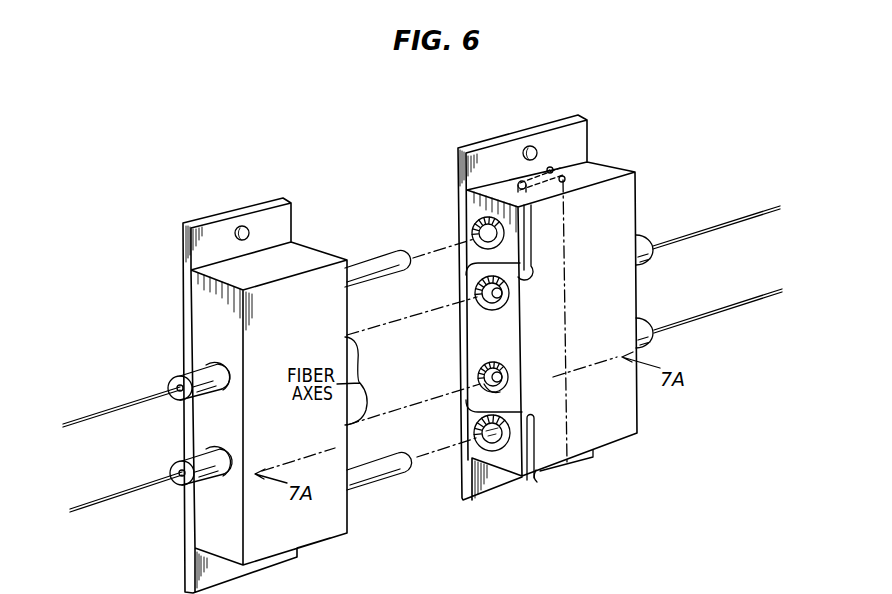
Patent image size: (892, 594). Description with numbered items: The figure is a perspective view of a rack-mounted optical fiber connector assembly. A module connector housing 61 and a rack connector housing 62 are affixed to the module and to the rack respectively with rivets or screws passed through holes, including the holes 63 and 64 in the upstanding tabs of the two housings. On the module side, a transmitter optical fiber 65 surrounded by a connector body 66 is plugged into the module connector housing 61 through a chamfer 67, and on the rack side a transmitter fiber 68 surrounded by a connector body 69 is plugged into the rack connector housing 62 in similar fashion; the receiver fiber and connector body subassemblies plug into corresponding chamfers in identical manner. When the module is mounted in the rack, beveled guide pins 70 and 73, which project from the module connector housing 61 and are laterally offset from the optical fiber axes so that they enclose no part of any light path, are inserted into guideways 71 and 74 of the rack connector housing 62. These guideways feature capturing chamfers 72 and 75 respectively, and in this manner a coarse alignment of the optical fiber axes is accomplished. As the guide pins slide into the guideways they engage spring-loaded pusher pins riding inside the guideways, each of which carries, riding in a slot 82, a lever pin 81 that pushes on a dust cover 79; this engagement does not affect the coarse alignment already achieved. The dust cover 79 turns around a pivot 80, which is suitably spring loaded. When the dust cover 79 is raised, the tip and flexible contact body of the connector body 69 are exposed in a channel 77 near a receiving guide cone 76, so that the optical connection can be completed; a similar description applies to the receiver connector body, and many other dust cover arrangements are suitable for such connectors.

The module connector housing 61 is at (186, 286).
The rack connector housing 62 is at (626, 174).
The hole 63 is at (241, 228).
The hole 64 is at (528, 147).
The transmitter optical fiber 65 is at (90, 505).
The connector body 66 is at (183, 464).
The chamfer 67 is at (212, 486).
The transmitter fiber 68 is at (764, 289).
The connector body 69 is at (644, 320).
The beveled guide pin 70 is at (370, 262).
The guideway 71 is at (483, 222).
The capturing chamfer 72 is at (474, 232).
The beveled guide pin 73 is at (377, 484).
The guideway 74 is at (493, 444).
The capturing chamfer 75 is at (476, 448).
The receiving guide cone 76 is at (482, 365).
The channel 77 is at (482, 372).
The dust cover 79 is at (545, 470).
The pivot 80 is at (553, 170).
The lever pin 81 is at (520, 183).
The slot 82 is at (566, 178).